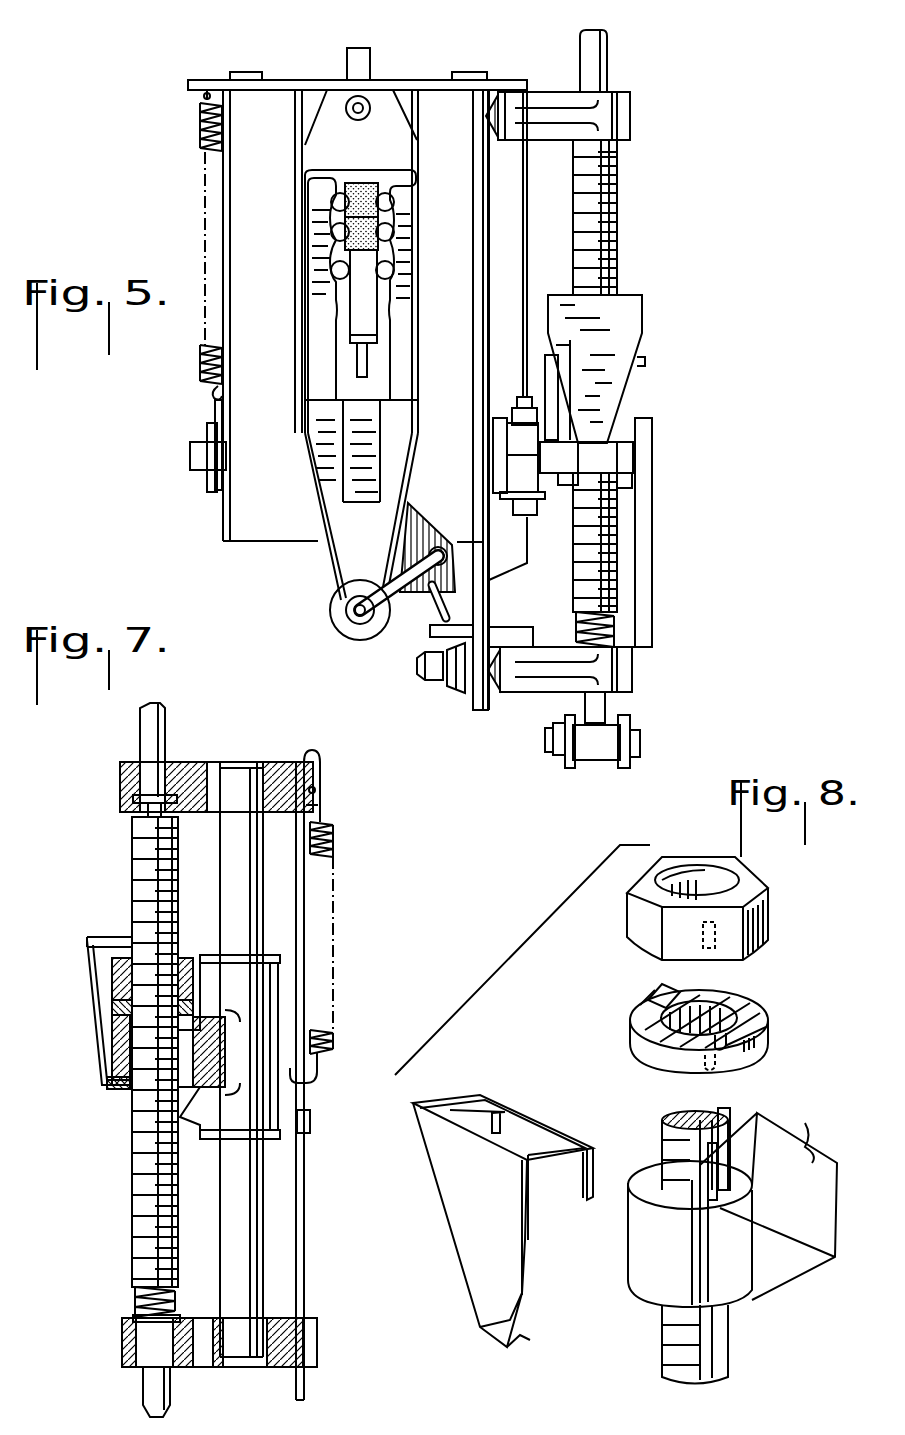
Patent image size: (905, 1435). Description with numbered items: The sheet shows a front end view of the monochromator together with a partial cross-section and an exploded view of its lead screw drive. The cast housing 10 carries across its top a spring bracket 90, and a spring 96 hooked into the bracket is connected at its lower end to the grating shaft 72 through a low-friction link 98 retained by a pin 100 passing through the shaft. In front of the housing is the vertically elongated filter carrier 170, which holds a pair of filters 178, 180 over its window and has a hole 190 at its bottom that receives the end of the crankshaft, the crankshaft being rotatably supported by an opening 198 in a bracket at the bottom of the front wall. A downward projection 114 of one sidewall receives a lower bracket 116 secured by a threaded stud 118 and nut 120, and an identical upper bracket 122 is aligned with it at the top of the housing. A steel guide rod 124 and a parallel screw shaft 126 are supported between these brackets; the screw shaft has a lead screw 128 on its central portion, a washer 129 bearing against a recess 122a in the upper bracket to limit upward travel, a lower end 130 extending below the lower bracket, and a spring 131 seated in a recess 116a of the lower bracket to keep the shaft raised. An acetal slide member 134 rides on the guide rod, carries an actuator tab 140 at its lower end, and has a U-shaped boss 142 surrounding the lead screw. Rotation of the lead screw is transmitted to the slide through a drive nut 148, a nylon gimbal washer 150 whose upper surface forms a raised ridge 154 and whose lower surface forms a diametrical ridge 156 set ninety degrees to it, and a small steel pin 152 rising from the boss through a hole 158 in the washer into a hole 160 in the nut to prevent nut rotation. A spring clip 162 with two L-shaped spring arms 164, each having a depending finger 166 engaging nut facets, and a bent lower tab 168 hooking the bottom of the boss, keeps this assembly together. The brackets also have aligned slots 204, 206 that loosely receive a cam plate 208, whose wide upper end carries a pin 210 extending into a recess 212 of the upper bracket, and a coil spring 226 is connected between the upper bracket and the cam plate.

In FIG. 5, the housing 10 is at (240, 545).
In FIG. 5, the grating shaft 72 is at (200, 460).
In FIG. 5, the spring bracket 90 is at (300, 80).
In FIG. 5, the spring 96 is at (206, 138).
In FIG. 5, the link 98 is at (218, 497).
In FIG. 5, the pin 100 is at (208, 432).
In FIG. 5, the downward projection 114 is at (483, 627).
In FIG. 5, the lower bracket 116 is at (635, 677).
In FIG. 7, the lower bracket 116 is at (122, 1340).
In FIG. 7, the recess 116a is at (135, 1320).
In FIG. 5, the threaded stud 118 is at (432, 677).
In FIG. 5, the nut 120 is at (450, 692).
In FIG. 5, the upper bracket 122 is at (632, 120).
In FIG. 7, the upper bracket 122 is at (120, 785).
In FIG. 7, the recess 122a is at (134, 805).
In FIG. 7, the guide rod 124 is at (250, 918).
In FIG. 5, the screw shaft 126 is at (608, 48).
In FIG. 7, the screw shaft 126 is at (148, 722).
In FIG. 5, the lead screw 128 is at (619, 223).
In FIG. 7, the lead screw 128 is at (140, 1197).
In FIG. 8, the lead screw 128 is at (702, 1345).
In FIG. 7, the washer 129 is at (152, 790).
In FIG. 5, the lower end of the shaft 130 is at (607, 712).
In FIG. 7, the spring 131 is at (140, 1303).
In FIG. 7, the slide member 134 is at (262, 1032).
In FIG. 7, the actuator tab 140 is at (312, 1120).
In FIG. 7, the U-shaped boss 142 is at (118, 1060).
In FIG. 8, the U-shaped boss 142 is at (785, 1272).
In FIG. 7, the drive nut 148 is at (122, 972).
In FIG. 8, the drive nut 148 is at (640, 935).
In FIG. 7, the gimbal washer 150 is at (120, 1010).
In FIG. 8, the gimbal washer 150 is at (650, 1026).
In FIG. 8, the pin 152 is at (707, 1185).
In FIG. 8, the raised ridge 154 is at (712, 995).
In FIG. 8, the diametrical ridge 156 is at (757, 1068).
In FIG. 8, the hole 158 is at (758, 1038).
In FIG. 8, the hole 160 is at (720, 937).
In FIG. 5, the spring clip 162 is at (628, 317).
In FIG. 7, the spring clip 162 is at (92, 952).
In FIG. 8, the spring clip 162 is at (465, 1268).
In FIG. 7, the L-shaped spring arms 164 is at (108, 937).
In FIG. 8, the L-shaped spring arms 164 is at (492, 1111).
In FIG. 8, the depending finger 166 is at (590, 1196).
In FIG. 7, the tab 168 is at (110, 1092).
In FIG. 8, the tab 168 is at (520, 1335).
In FIG. 5, the filter carrier 170 is at (313, 512).
In FIG. 5, the filter 178 is at (336, 202).
In FIG. 5, the filter 180 is at (352, 234).
In FIG. 5, the hole 190 is at (352, 618).
In FIG. 5, the opening 198 is at (443, 548).
In FIG. 7, the slot 204 is at (296, 762).
In FIG. 7, the slot 206 is at (305, 1320).
In FIG. 7, the cam plate 208 is at (305, 1218).
In FIG. 7, the pin 210 is at (317, 790).
In FIG. 7, the recess 212 is at (312, 806).
In FIG. 7, the coil spring 226 is at (335, 845).